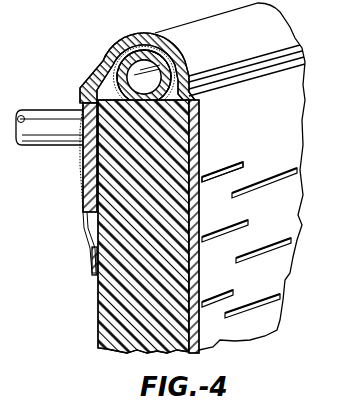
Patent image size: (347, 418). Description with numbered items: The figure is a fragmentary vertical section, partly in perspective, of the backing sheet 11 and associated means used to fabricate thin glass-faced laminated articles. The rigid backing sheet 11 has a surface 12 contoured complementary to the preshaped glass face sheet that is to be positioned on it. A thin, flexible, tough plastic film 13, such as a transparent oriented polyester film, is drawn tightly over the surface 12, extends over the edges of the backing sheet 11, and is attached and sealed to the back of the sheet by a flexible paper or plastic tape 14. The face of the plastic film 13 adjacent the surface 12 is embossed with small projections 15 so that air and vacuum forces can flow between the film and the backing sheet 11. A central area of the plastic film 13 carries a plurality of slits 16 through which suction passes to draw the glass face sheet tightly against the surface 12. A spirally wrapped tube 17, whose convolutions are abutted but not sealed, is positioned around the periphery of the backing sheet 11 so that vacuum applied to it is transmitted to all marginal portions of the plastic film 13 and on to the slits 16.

The backing sheet 11 is at (109, 308).
The surface 12 is at (199, 205).
The plastic film 13 is at (197, 129).
The tape 14 is at (93, 251).
The projections 15 is at (212, 155).
The slits 16 is at (278, 238).
The spirally wrapped tube 17 is at (113, 80).